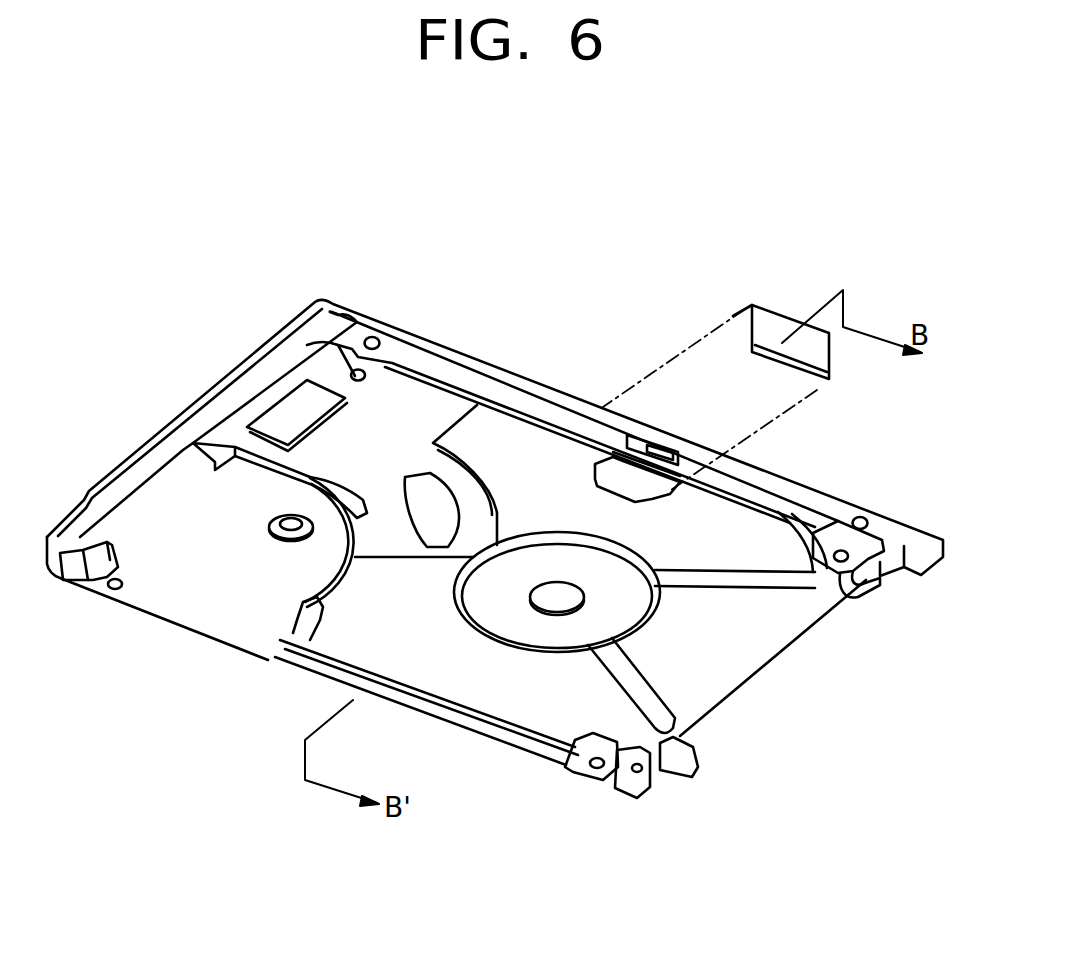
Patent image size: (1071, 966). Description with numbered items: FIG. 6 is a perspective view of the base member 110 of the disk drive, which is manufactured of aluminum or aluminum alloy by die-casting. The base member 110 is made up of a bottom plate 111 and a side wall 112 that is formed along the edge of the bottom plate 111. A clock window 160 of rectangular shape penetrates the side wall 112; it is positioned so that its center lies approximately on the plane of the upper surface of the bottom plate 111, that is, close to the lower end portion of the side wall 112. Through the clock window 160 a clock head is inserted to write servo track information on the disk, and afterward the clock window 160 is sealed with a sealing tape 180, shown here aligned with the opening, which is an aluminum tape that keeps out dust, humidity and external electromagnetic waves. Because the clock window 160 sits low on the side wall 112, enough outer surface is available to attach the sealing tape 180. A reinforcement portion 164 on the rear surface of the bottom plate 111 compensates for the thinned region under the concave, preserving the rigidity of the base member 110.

The base member 110 is at (515, 255).
The bottom plate 111 is at (419, 401).
The side wall 112 is at (402, 342).
The clock window 160 is at (640, 443).
The reinforcement portion 164 is at (650, 492).
The sealing tape 180 is at (773, 313).